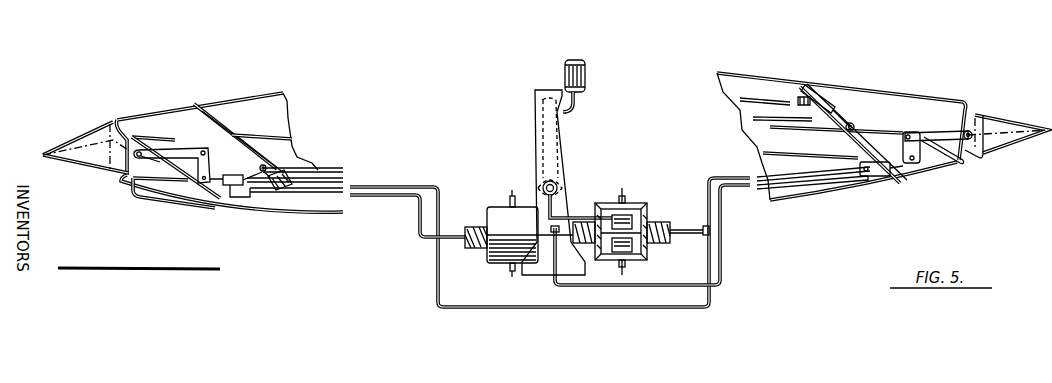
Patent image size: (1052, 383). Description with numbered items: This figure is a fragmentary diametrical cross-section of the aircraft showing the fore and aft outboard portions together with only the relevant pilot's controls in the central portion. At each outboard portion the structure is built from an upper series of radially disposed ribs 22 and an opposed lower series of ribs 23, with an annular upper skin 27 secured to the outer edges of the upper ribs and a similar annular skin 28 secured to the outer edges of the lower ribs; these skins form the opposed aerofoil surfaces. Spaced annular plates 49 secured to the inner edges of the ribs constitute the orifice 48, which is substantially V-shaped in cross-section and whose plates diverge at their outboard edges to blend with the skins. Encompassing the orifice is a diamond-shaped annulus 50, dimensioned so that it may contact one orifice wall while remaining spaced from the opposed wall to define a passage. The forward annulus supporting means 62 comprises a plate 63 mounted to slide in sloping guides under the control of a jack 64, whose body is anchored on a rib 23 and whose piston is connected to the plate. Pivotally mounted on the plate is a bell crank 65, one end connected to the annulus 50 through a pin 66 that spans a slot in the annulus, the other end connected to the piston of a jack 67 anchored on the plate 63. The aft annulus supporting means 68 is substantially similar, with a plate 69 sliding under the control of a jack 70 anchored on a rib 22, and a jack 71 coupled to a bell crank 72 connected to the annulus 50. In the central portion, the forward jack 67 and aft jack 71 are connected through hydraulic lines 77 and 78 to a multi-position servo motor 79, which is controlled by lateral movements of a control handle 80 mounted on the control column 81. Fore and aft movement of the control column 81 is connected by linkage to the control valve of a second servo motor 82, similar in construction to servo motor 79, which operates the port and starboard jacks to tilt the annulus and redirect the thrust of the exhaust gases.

The upper ribs 22 is at (205, 128).
The lower ribs 23 is at (167, 185).
The upper skin 27 is at (245, 96).
The lower skin 28 is at (198, 203).
The orifice 48 is at (970, 158).
The annular plates 49 is at (298, 166).
The annulus 50 is at (88, 137).
The forward annulus supporting means 62 is at (276, 157).
The plate 63 is at (243, 150).
The jack 64 is at (285, 189).
The bell crank 65 is at (173, 153).
The pin 66 is at (138, 157).
The jack 67 is at (247, 184).
The aft annulus supporting means 68 is at (843, 107).
The plate 69 is at (885, 120).
The jack 70 is at (800, 98).
The jack 71 is at (890, 172).
The bell crank 72 is at (935, 150).
The hydraulic line 77 is at (350, 218).
The hydraulic line 78 is at (385, 185).
The servo motor 79 is at (630, 202).
The control handle 80 is at (590, 75).
The control column 81 is at (568, 165).
The servo motor 82 is at (503, 212).